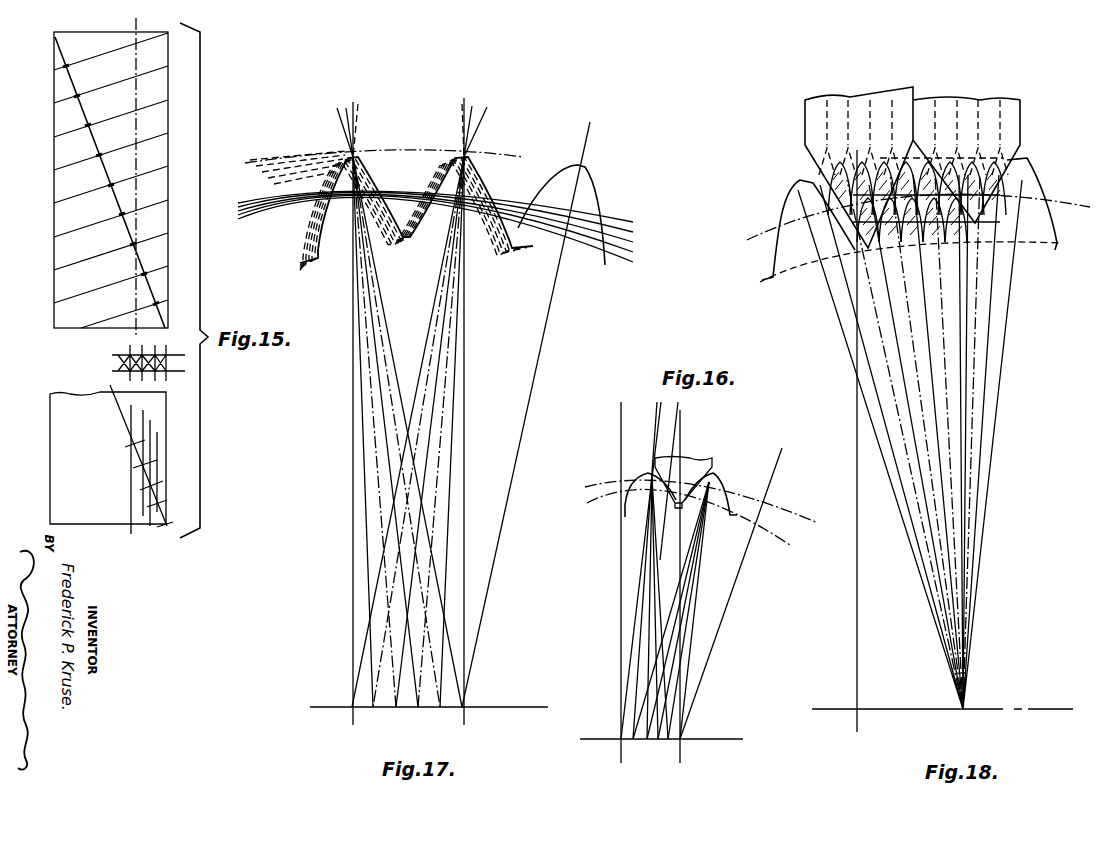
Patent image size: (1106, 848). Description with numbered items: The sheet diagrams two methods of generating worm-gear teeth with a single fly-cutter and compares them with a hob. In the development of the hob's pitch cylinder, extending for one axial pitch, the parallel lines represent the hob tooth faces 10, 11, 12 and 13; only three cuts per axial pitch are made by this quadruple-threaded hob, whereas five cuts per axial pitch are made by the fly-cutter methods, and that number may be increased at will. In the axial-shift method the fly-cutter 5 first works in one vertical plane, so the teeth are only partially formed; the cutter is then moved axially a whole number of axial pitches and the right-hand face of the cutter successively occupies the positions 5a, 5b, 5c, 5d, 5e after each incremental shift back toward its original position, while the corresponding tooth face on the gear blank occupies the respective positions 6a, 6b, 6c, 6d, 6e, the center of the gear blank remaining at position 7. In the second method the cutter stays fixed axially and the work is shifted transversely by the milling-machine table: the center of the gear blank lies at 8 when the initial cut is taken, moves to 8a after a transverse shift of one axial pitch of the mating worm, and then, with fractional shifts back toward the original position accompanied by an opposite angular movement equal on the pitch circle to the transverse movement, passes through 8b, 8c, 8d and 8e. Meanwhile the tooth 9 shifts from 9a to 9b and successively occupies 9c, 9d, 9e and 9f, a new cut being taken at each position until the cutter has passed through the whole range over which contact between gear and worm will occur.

In FIG. 16, the fly-cutter 5 is at (697, 458).
In FIG. 18, the fly-cutter 5 is at (1022, 104).
In FIG. 18, the fly-cutter position after shift of one axial pitch 5a is at (913, 92).
In FIG. 18, the fly-cutter position after first fractional shift 5b is at (933, 102).
In FIG. 18, the fly-cutter position after second fractional shift 5c is at (958, 100).
In FIG. 18, the fly-cutter position after third fractional shift 5d is at (985, 100).
In FIG. 18, the fly-cutter position after fourth fractional shift 5e is at (1003, 100).
In FIG. 18, the gear tooth face position 6a is at (877, 238).
In FIG. 18, the gear tooth face position 6b is at (898, 237).
In FIG. 18, the gear tooth face position 6c is at (919, 237).
In FIG. 18, the gear tooth face position 6d is at (940, 237).
In FIG. 18, the gear tooth face position 6e is at (962, 237).
In FIG. 18, the center of gear blank 7 is at (967, 702).
In FIG. 17, the center of gear blank at initial cut 8 is at (467, 701).
In FIG. 16, the center of gear blank at initial cut 8 is at (684, 737).
In FIG. 17, the gear-blank center after one-pitch transverse shift 8a is at (353, 709).
In FIG. 16, the gear-blank center after one-pitch transverse shift 8a is at (619, 741).
In FIG. 17, the gear-blank center after first fractional shift 8b is at (374, 709).
In FIG. 17, the gear-blank center after further fractional shift 8c is at (397, 709).
In FIG. 17, the gear-blank center after further fractional shift 8d is at (419, 709).
In FIG. 17, the gear-blank center after further fractional shift 8e is at (441, 709).
In FIG. 17, the tooth of gear blank 9 is at (388, 227).
In FIG. 17, the tooth position 9a is at (313, 260).
In FIG. 17, the tooth position 9b is at (300, 260).
In FIG. 17, the tooth position 9c is at (292, 250).
In FIG. 17, the tooth position 9d is at (296, 243).
In FIG. 17, the tooth position 9e is at (300, 238).
In FIG. 17, the tooth position 9f is at (302, 240).
In FIG. 15, the hob tooth face 10 is at (123, 213).
In FIG. 15, the hob tooth face 11 is at (134, 244).
In FIG. 15, the hob tooth face 12 is at (151, 261).
In FIG. 15, the hob tooth face 13 is at (150, 315).